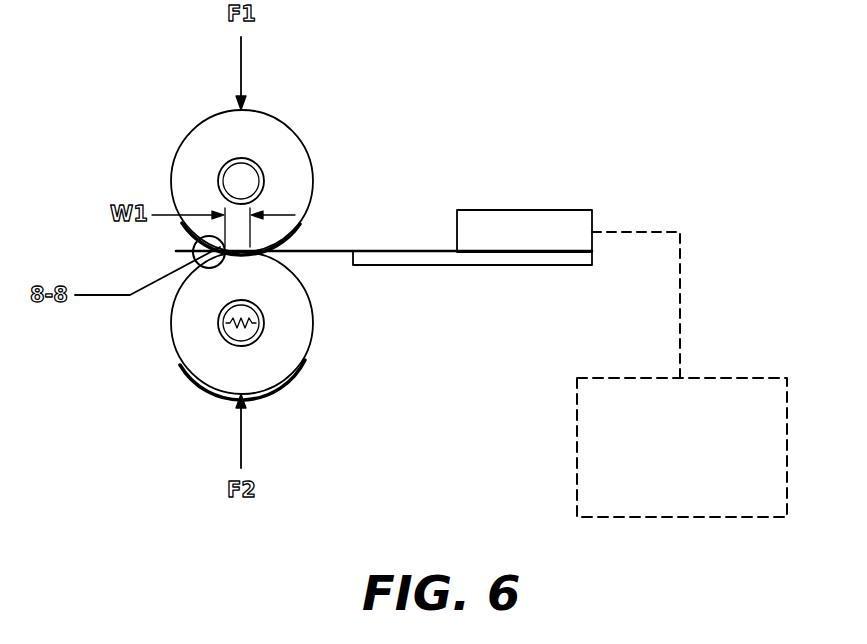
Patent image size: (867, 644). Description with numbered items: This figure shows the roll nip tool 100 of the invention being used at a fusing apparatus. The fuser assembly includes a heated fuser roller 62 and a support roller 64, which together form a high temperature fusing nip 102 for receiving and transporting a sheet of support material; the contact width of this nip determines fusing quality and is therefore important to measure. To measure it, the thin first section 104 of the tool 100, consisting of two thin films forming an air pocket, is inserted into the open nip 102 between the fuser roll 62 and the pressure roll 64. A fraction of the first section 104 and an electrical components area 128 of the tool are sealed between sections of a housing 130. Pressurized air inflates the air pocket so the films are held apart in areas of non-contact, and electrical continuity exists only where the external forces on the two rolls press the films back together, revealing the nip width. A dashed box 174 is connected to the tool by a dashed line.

The heated fuser roller 62 is at (302, 147).
The support roller 64 is at (302, 363).
The roll nip tool 100 is at (523, 208).
The fusing nip 102 is at (282, 255).
The first section 104 is at (333, 250).
The electrical components area 128 is at (395, 249).
The housing 130 is at (460, 258).
The controller 174 is at (667, 517).